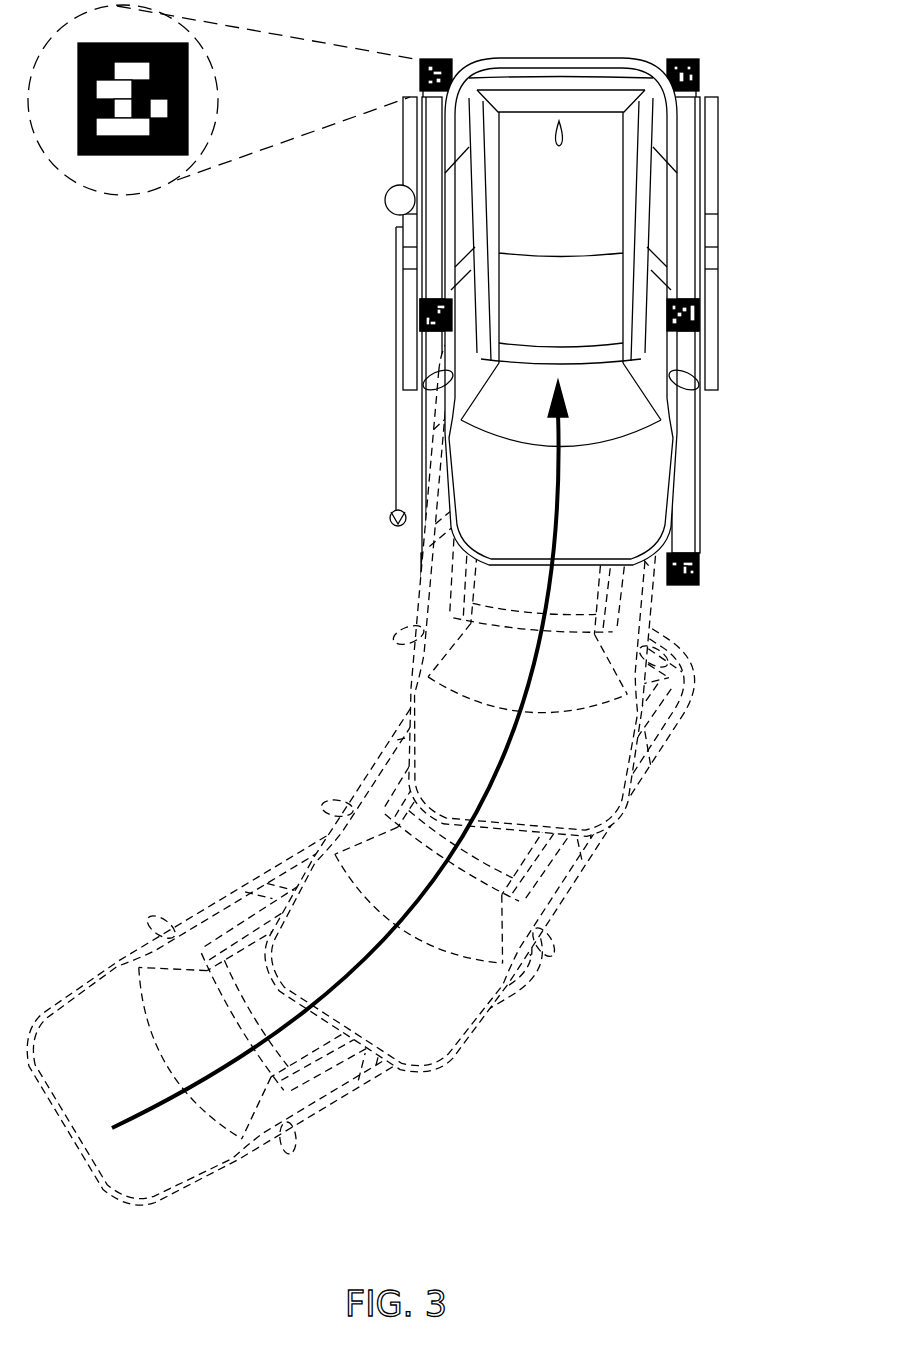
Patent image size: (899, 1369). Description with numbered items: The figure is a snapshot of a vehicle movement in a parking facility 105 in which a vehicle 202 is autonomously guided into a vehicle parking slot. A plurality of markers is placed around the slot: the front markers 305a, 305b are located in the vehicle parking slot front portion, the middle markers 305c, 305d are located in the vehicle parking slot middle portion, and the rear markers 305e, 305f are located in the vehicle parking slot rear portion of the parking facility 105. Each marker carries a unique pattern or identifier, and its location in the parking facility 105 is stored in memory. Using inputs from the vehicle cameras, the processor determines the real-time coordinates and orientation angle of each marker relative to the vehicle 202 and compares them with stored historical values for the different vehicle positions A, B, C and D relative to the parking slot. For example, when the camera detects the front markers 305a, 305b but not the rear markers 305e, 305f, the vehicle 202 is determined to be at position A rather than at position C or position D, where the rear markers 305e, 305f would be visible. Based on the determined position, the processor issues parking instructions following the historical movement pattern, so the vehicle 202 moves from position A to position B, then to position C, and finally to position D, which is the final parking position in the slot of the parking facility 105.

The parking facility 105 is at (444, 295).
The vehicle 202 is at (623, 183).
The front marker 305a is at (421, 568).
The front marker 305b is at (699, 570).
The middle marker 305c is at (420, 312).
The middle marker 305d is at (699, 312).
The rear marker 305e is at (420, 68).
The rear marker 305f is at (699, 72).
The position A is at (100, 970).
The position B is at (360, 790).
The position C is at (640, 757).
The position D is at (631, 311).